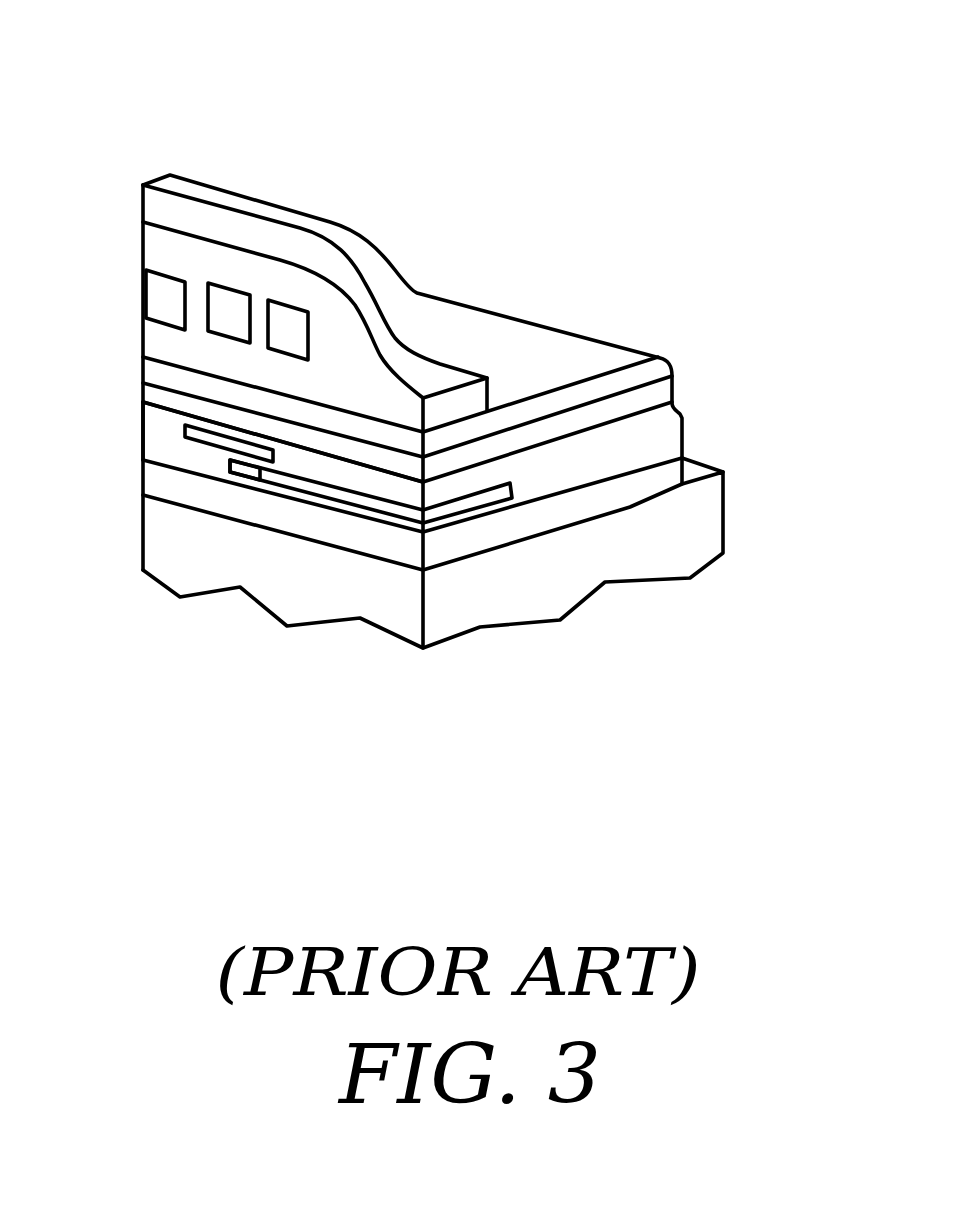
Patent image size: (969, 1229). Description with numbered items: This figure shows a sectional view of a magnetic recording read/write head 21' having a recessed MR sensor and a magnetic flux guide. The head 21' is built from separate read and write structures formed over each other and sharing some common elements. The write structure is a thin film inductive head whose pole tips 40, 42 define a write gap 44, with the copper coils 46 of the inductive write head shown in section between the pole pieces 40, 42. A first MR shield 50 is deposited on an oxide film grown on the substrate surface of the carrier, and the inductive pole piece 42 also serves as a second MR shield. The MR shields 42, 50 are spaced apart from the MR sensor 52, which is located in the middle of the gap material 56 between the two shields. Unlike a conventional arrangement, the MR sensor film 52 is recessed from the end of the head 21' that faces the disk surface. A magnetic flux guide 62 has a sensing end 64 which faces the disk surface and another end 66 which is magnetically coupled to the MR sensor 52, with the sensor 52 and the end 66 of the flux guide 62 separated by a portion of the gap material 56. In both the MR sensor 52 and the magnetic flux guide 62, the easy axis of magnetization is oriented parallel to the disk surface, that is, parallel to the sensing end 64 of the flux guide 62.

The read/write head 21' is at (412, 335).
The pole tip 40 is at (453, 403).
The pole tip 42 is at (597, 412).
The write gap 44 is at (525, 413).
The copper coils 46 is at (288, 317).
The first MR shield 50 is at (283, 517).
The MR sensor 52 is at (202, 437).
The gap material 56 is at (155, 424).
The magnetic flux guide 62 is at (365, 505).
The sensing end 64 is at (465, 510).
The end of magnetic flux guide 66 is at (245, 473).